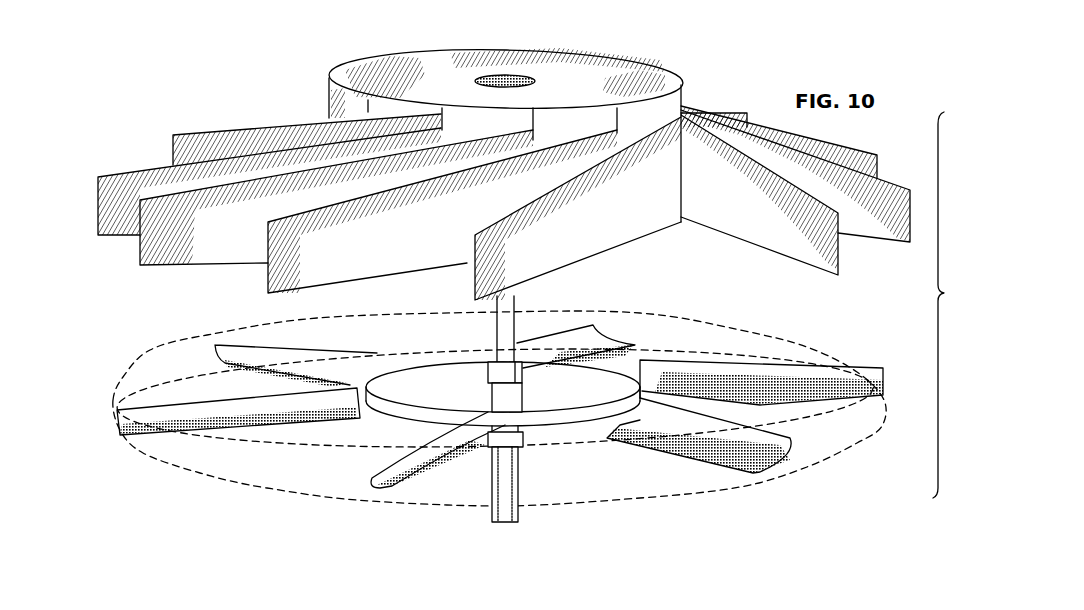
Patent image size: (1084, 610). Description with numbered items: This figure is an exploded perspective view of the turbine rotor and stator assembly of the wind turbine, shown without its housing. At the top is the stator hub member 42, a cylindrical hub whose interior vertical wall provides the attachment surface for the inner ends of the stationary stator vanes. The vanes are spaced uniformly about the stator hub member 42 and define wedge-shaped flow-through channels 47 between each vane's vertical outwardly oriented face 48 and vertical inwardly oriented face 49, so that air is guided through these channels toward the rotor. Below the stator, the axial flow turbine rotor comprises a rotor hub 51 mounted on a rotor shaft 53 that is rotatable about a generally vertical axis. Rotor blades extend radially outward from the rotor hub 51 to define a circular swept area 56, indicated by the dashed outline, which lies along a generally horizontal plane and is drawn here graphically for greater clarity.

The stator hub member 42 is at (329, 100).
The wedge-shaped flow-through channels 47 is at (207, 152).
The vertical outwardly oriented face 48 is at (205, 240).
The vertical inwardly oriented face 49 is at (757, 215).
The rotor hub 51 is at (547, 422).
The rotor shaft 53 is at (493, 327).
The circular swept area 56 is at (137, 355).